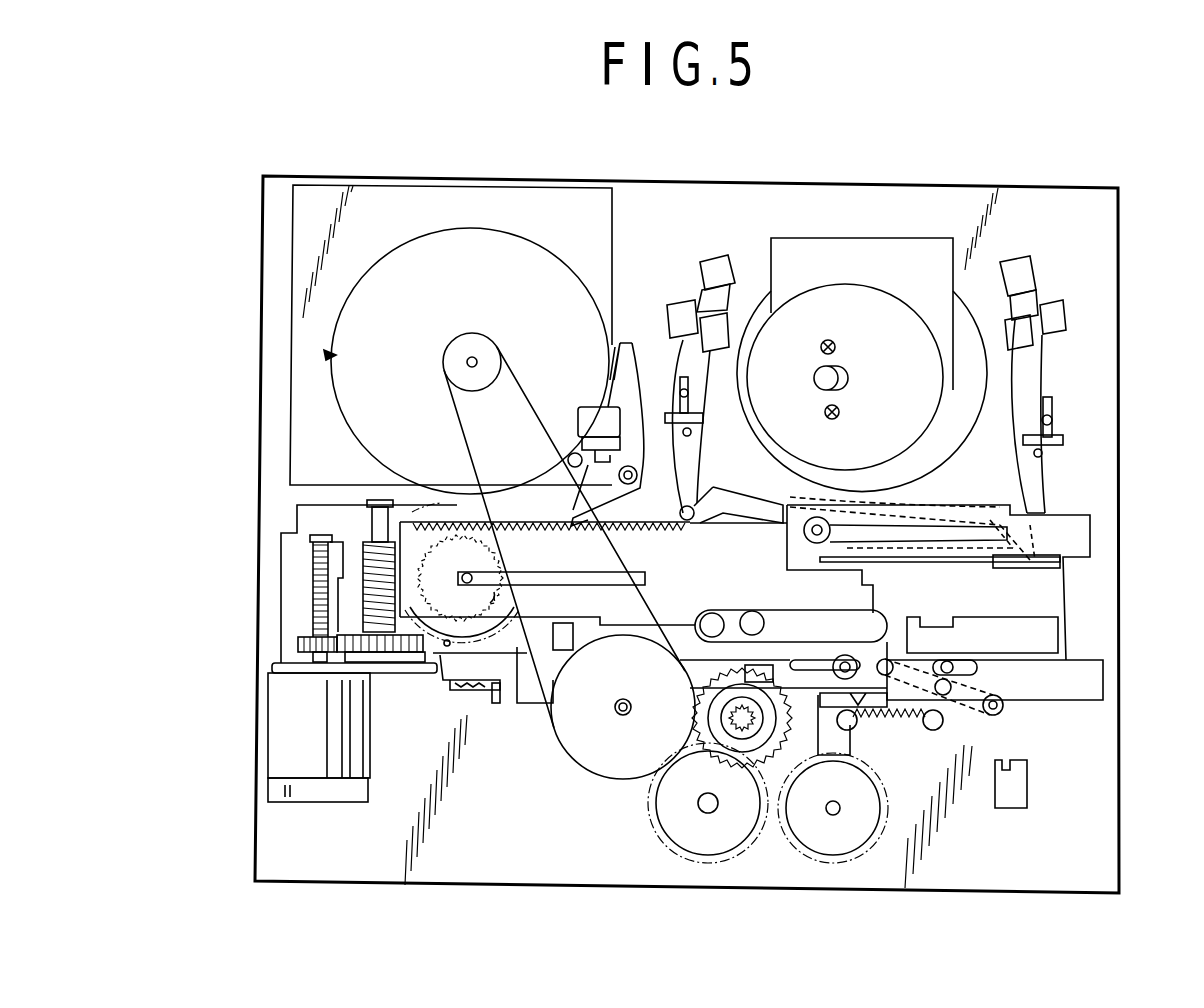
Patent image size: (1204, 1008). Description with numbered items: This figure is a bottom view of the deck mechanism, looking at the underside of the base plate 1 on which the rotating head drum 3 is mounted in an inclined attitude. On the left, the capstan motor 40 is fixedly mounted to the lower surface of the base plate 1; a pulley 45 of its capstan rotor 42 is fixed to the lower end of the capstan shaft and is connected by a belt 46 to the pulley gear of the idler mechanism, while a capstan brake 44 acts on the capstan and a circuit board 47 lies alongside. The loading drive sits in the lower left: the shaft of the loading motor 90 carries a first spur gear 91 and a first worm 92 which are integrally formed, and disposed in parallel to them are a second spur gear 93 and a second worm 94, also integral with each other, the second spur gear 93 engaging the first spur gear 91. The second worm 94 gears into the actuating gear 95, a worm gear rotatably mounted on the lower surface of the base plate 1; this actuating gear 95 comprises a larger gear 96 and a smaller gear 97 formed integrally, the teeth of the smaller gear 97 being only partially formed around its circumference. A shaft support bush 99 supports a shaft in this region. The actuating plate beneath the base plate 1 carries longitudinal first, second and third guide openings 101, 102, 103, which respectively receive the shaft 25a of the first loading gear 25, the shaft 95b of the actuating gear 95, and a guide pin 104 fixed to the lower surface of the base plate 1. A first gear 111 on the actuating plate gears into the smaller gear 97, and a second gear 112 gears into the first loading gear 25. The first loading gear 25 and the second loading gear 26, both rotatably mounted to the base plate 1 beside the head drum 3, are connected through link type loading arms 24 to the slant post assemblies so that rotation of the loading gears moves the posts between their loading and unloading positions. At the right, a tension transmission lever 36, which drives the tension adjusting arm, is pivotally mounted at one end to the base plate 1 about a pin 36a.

The base plate 1 is at (1103, 213).
The rotating head drum 3 is at (875, 305).
The loading arm 24 is at (1040, 481).
The first loading gear 25 is at (792, 497).
The shaft of the first loading gear 25a is at (811, 538).
The second loading gear 26 is at (913, 497).
The tension transmission lever 36 is at (975, 707).
The pin 36a is at (903, 728).
The capstan motor 40 is at (330, 356).
The capstan rotor 42 is at (355, 418).
The capstan brake 44 is at (620, 343).
The pulley 45 is at (473, 345).
The belt 46 is at (548, 310).
The circuit board 47 is at (407, 205).
The loading motor 90 is at (280, 737).
The first spur gear 91 is at (298, 643).
The first worm 92 is at (315, 573).
The second spur gear 93 is at (360, 678).
The second worm 94 is at (375, 601).
The actuating gear 95 is at (465, 520).
The shaft of the actuating gear 95b is at (490, 603).
The larger gear 96 is at (443, 662).
The smaller gear 97 is at (492, 704).
The shaft support bush 99 is at (378, 500).
The first guide opening 101 is at (990, 520).
The second guide opening 102 is at (548, 570).
The third guide opening 103 is at (948, 658).
The guide pin 104 is at (845, 655).
The first gear 111 is at (513, 521).
The second gear 112 is at (885, 550).